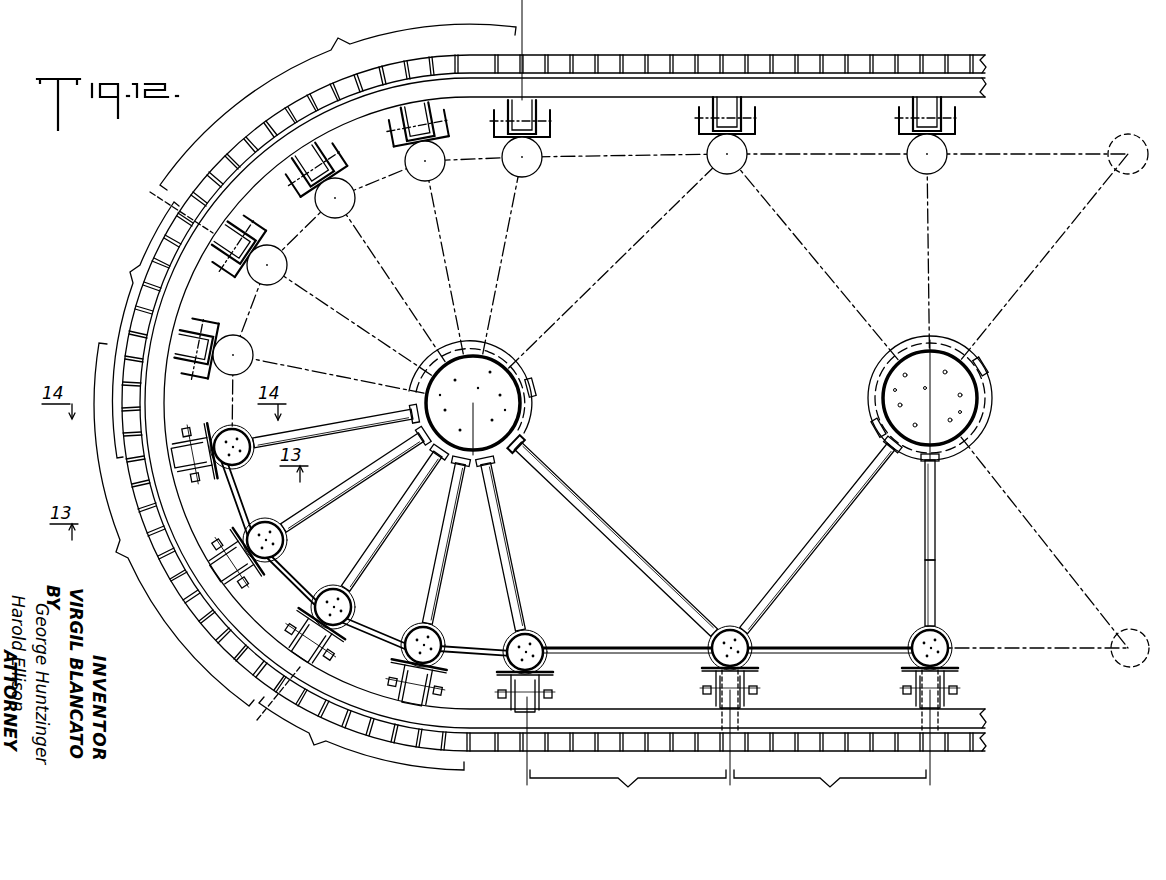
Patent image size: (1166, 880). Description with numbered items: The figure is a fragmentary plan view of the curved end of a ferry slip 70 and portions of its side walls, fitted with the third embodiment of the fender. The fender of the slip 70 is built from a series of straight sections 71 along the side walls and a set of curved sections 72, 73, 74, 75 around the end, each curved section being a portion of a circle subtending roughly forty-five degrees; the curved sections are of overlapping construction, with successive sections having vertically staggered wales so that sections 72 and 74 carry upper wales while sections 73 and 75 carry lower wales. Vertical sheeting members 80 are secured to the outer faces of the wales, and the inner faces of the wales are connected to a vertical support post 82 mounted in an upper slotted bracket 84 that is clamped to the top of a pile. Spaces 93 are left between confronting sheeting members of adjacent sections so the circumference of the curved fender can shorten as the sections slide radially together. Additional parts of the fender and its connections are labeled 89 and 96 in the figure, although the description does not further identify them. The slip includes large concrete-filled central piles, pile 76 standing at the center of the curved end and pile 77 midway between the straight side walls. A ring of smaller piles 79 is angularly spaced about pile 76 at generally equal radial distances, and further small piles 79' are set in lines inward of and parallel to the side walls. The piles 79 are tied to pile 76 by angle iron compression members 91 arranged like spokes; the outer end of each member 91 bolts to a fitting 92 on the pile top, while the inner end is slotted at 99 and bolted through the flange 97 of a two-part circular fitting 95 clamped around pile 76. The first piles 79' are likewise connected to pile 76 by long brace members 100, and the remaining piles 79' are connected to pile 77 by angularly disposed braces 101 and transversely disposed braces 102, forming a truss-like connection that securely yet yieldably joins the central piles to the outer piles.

The ferry slip 70 is at (945, 578).
The straight sections 71 is at (728, 786).
The curved section 72 is at (361, 733).
The curved section 73 is at (169, 524).
The curved section 74 is at (136, 330).
The curved section 75 is at (338, 105).
The central pile 76 is at (510, 415).
The central pile 77 is at (975, 412).
The small piles 79 is at (393, 405).
The small piles 79' is at (928, 384).
The sheeting members 80 is at (150, 405).
The support post 82 is at (235, 575).
The upper slotted bracket 84 is at (230, 523).
The guide rail 89 is at (172, 296).
The compression members 91 is at (365, 418).
The fitting 92 is at (362, 600).
The spaces 93 is at (280, 112).
The circular fitting 95 is at (511, 340).
The strut connection clip 96 is at (530, 385).
The flange 97 is at (450, 345).
The slot 99 is at (528, 437).
The brace member 100 is at (615, 245).
The angularly disposed braces 101 is at (808, 232).
The transversely disposed braces 102 is at (945, 245).